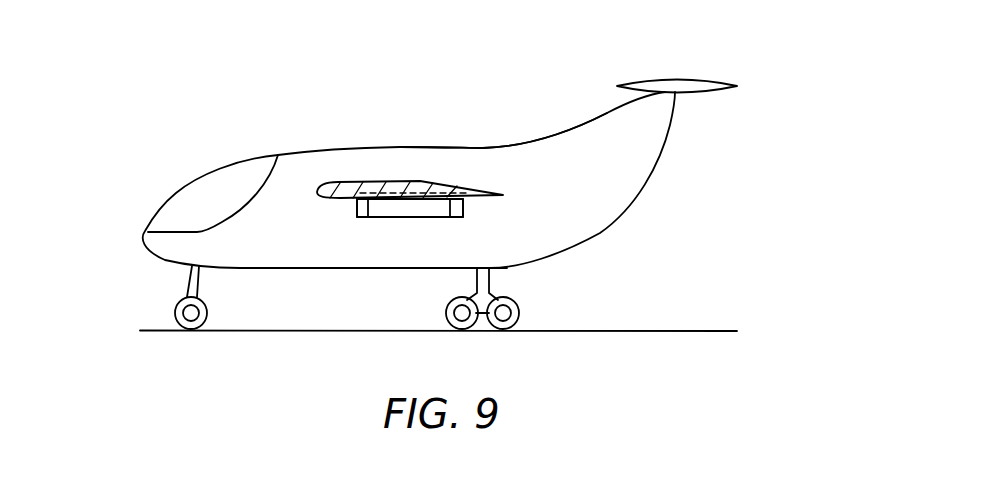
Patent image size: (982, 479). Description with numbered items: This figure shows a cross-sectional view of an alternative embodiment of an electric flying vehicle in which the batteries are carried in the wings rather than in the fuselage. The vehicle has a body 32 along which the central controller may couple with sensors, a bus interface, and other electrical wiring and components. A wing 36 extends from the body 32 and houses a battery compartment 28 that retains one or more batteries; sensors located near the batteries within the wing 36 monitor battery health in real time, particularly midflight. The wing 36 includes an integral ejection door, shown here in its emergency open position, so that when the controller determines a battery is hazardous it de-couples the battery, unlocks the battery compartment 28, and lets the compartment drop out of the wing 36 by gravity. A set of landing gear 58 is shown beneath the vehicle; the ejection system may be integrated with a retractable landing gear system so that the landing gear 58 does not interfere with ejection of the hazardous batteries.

The body 32 is at (245, 163).
The wing 36 is at (568, 157).
The battery compartment 28 is at (352, 197).
The landing gear 58 is at (173, 338).